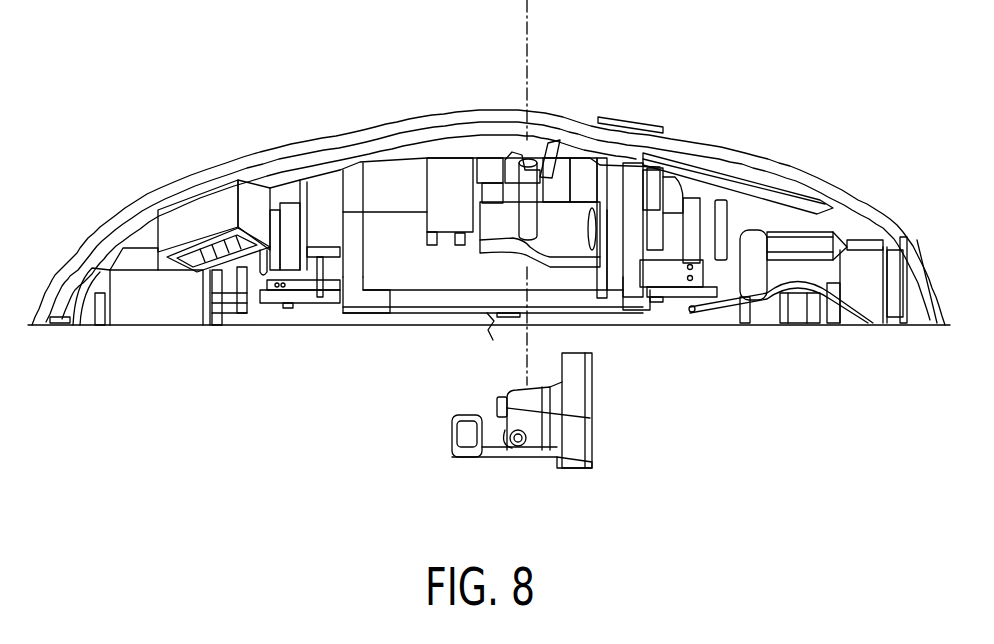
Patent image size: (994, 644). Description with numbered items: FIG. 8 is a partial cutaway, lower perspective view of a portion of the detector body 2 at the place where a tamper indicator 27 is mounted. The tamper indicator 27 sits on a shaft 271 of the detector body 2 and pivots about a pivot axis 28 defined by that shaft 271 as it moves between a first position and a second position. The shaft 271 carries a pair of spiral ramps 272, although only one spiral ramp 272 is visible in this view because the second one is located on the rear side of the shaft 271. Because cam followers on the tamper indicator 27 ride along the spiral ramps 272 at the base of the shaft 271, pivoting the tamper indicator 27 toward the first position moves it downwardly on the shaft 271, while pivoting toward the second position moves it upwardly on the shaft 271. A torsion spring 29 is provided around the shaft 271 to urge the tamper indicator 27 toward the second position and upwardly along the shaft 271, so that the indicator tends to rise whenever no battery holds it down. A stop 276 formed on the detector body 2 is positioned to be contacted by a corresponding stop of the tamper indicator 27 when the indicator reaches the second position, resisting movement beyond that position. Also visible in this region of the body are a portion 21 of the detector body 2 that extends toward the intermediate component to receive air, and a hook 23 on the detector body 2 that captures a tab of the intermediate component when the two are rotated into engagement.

The detector body 2 is at (117, 218).
The portion 21 is at (433, 115).
The hook 23 is at (643, 125).
The tamper indicator 27 is at (590, 423).
The pivot axis 28 is at (530, 47).
The torsion spring 29 is at (467, 449).
The shaft 271 is at (517, 217).
The spiral ramp 272 is at (513, 153).
The stop 276 is at (565, 167).